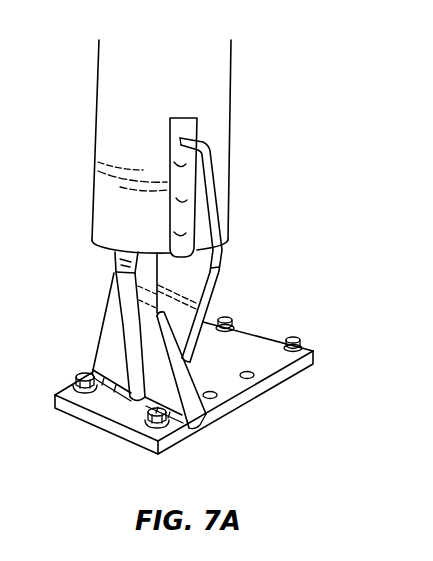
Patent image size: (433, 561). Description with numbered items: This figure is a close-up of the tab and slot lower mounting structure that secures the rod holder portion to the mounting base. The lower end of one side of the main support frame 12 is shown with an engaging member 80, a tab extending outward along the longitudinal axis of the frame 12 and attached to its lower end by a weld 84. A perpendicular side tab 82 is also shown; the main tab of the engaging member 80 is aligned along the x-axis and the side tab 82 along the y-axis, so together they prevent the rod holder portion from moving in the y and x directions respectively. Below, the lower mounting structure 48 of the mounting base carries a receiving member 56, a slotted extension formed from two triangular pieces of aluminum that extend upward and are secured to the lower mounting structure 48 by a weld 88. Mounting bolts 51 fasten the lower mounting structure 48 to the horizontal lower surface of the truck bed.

The main support frame 12 is at (117, 108).
The weld 84 is at (183, 200).
The engaging member 80 is at (203, 221).
The side tab 82 is at (137, 337).
The receiving member 56 is at (113, 345).
The lower mounting structure 48 is at (248, 350).
The mounting bolts 51 is at (140, 412).
The weld 88 is at (192, 416).